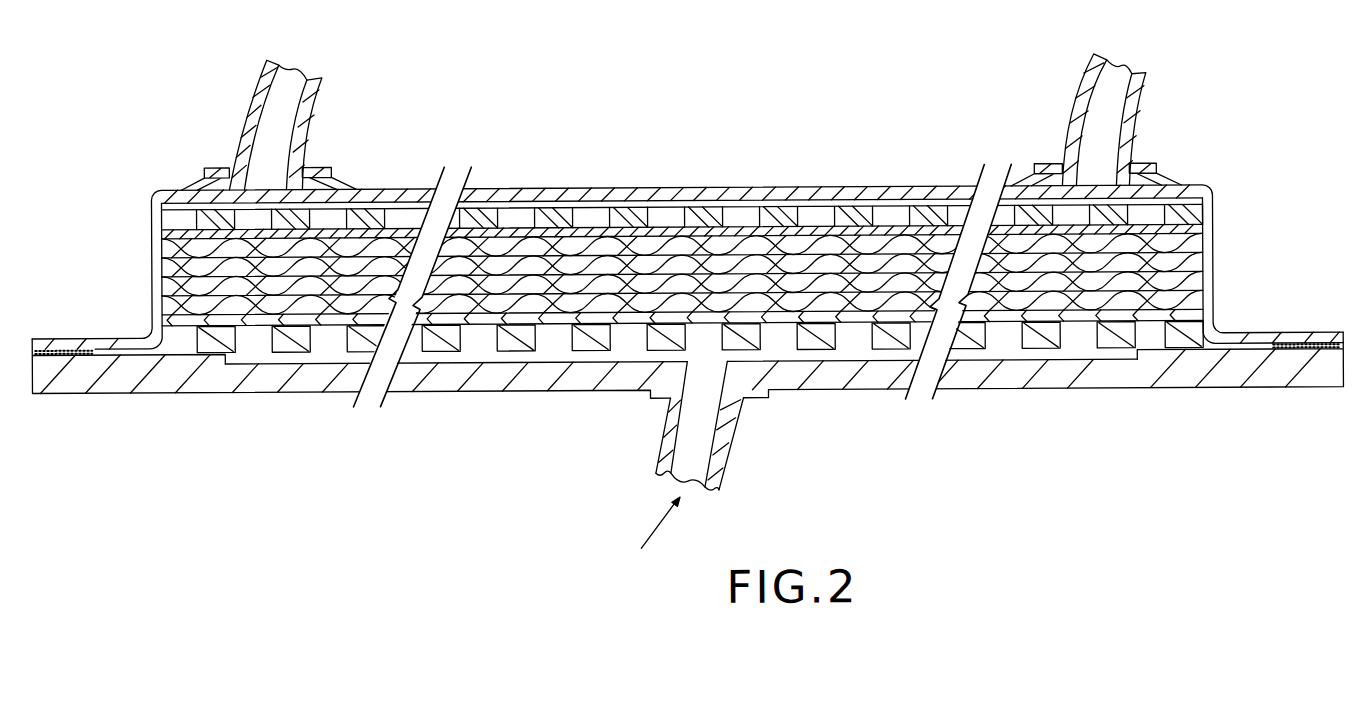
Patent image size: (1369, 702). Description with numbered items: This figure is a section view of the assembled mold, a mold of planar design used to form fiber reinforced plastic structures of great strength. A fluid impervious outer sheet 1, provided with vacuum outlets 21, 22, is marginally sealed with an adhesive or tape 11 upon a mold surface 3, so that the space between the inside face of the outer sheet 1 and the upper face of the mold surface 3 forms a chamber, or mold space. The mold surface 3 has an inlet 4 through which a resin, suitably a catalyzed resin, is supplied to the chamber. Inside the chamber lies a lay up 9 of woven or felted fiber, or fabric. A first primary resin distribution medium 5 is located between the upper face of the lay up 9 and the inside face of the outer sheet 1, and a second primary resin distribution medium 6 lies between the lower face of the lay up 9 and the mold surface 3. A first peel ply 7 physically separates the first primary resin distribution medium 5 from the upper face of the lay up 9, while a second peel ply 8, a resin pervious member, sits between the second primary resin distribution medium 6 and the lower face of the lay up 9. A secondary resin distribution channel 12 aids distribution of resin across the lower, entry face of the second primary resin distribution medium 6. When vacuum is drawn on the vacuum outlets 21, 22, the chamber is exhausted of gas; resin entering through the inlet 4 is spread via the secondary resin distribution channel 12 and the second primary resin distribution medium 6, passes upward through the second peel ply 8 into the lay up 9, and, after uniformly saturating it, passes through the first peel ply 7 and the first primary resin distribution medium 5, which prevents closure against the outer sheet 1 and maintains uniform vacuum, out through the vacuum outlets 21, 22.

The fluid impervious outer sheet 1 is at (828, 187).
The vacuum outlet 21 is at (258, 79).
The vacuum outlet 22 is at (1147, 104).
The mold surface 3 is at (229, 391).
The inlet 4 is at (728, 461).
The first primary resin distribution medium 5 is at (163, 209).
The second primary resin distribution medium 6 is at (1187, 343).
The first peel ply 7 is at (1215, 228).
The second peel ply 8 is at (1212, 320).
The lay up 9 is at (1207, 283).
The adhesive or tape 11 is at (28, 346).
The secondary resin distribution channel 12 is at (1077, 357).